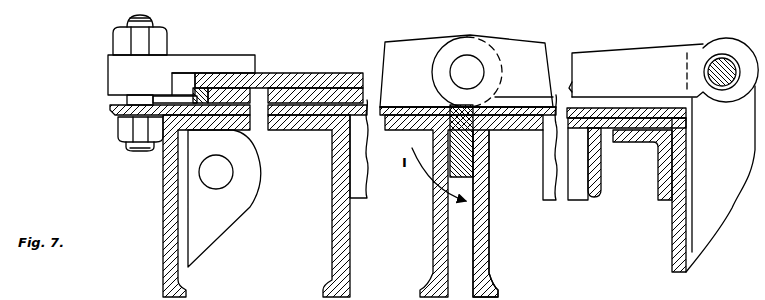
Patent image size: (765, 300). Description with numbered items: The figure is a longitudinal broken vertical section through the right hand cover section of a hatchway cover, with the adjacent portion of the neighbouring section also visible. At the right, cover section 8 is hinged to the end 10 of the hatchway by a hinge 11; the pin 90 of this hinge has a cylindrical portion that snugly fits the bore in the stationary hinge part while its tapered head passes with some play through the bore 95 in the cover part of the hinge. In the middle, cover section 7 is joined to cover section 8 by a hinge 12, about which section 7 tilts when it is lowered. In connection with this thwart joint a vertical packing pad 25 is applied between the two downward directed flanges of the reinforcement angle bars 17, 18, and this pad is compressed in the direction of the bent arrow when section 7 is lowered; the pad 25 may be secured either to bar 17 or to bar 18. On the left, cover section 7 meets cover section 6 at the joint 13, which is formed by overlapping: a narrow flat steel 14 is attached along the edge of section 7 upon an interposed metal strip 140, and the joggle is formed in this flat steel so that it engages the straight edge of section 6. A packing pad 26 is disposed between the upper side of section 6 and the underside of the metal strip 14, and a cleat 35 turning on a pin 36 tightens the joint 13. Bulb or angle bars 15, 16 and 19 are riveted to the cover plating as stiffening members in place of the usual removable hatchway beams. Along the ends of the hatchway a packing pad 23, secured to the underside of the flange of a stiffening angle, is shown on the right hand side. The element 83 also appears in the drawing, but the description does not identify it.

The cover section 6 is at (112, 106).
The cover section 7 is at (393, 113).
The cover section 8 is at (567, 120).
The end of hatchway 10 is at (670, 247).
The hinge 11 is at (695, 55).
The hinge 12 is at (467, 72).
The joint 13 is at (195, 92).
The flat steel 14 is at (288, 82).
The interposed metal strip 140 is at (320, 98).
The angle bar 15 is at (172, 200).
The angle bar 16 is at (343, 245).
The reinforcement angle bar 17 is at (440, 247).
The reinforcement angle bar 18 is at (487, 247).
The angle bar 19 is at (593, 177).
The packing pad 23 is at (632, 144).
The vertical packing pad 25 is at (475, 160).
The packing pad 26 is at (260, 143).
The cleat 35 is at (233, 63).
The pin 36 is at (130, 157).
The washer plate 83 is at (158, 98).
The pin 90 is at (713, 56).
The bore 95 is at (729, 56).